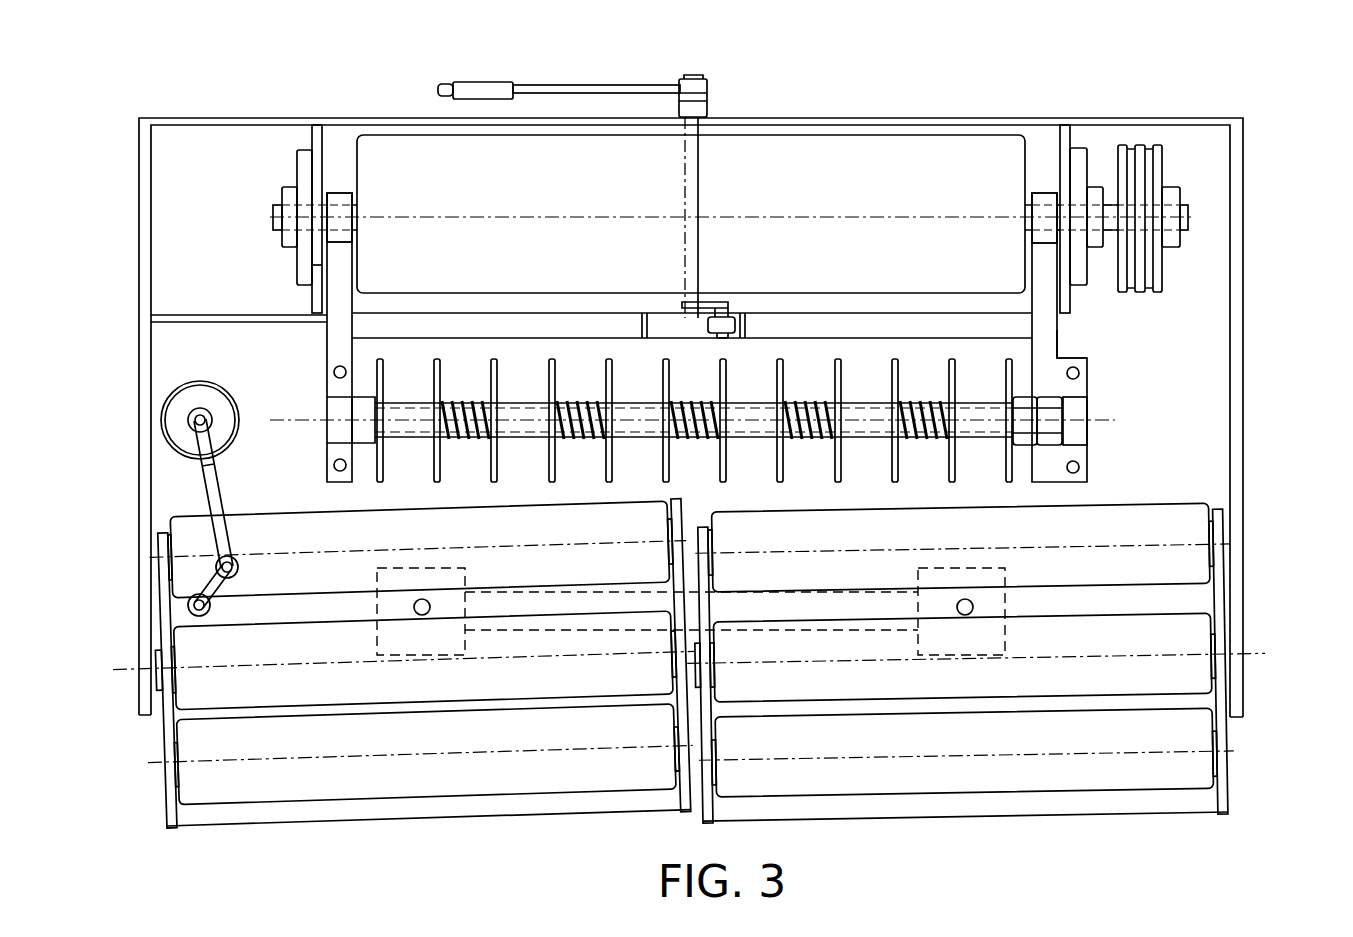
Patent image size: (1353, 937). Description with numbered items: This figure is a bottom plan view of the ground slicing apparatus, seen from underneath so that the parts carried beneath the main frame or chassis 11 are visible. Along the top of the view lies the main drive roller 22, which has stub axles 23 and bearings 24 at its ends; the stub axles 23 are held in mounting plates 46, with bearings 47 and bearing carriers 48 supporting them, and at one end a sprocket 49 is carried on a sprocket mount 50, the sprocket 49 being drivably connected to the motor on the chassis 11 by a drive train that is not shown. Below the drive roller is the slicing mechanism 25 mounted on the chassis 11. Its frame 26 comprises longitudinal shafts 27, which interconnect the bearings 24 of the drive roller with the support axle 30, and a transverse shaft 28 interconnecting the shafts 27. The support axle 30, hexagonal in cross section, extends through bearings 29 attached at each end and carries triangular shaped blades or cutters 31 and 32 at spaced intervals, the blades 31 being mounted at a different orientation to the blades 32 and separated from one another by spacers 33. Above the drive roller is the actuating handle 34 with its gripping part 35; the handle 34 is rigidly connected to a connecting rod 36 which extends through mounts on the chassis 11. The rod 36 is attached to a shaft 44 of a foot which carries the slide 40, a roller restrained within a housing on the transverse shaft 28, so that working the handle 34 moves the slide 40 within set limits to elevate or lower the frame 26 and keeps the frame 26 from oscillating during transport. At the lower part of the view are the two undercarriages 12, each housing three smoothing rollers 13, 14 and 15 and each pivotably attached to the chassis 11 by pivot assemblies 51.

The main frame or chassis 11 is at (129, 182).
The undercarriage 12 is at (165, 735).
The smoothing roller 13 is at (378, 792).
The smoothing roller 14 is at (303, 697).
The smoothing roller 15 is at (568, 579).
The main drive roller 22 is at (410, 165).
The stub axle 23 is at (1188, 210).
The bearing 24 is at (337, 197).
The slicing mechanism 25 is at (460, 358).
The frame 26 is at (1064, 337).
The longitudinal shaft 27 is at (343, 259).
The transverse shaft 28 is at (615, 327).
The bearing 29 is at (1080, 438).
The support axle 30 is at (458, 432).
The blade or cutter 31 is at (493, 465).
The blade or cutter 32 is at (313, 270).
The spacer 33 is at (478, 410).
The actuating handle 34 is at (555, 88).
The gripping part 35 is at (470, 84).
The connecting rod 36 is at (702, 172).
The slide 40 is at (735, 323).
The shaft 44 is at (712, 303).
The mounting plate 46 is at (312, 302).
The bearing 47 is at (287, 198).
The bearing carrier 48 is at (300, 163).
The sprocket 49 is at (1150, 155).
The sprocket mount 50 is at (1170, 198).
The pivot assembly 51 is at (390, 652).